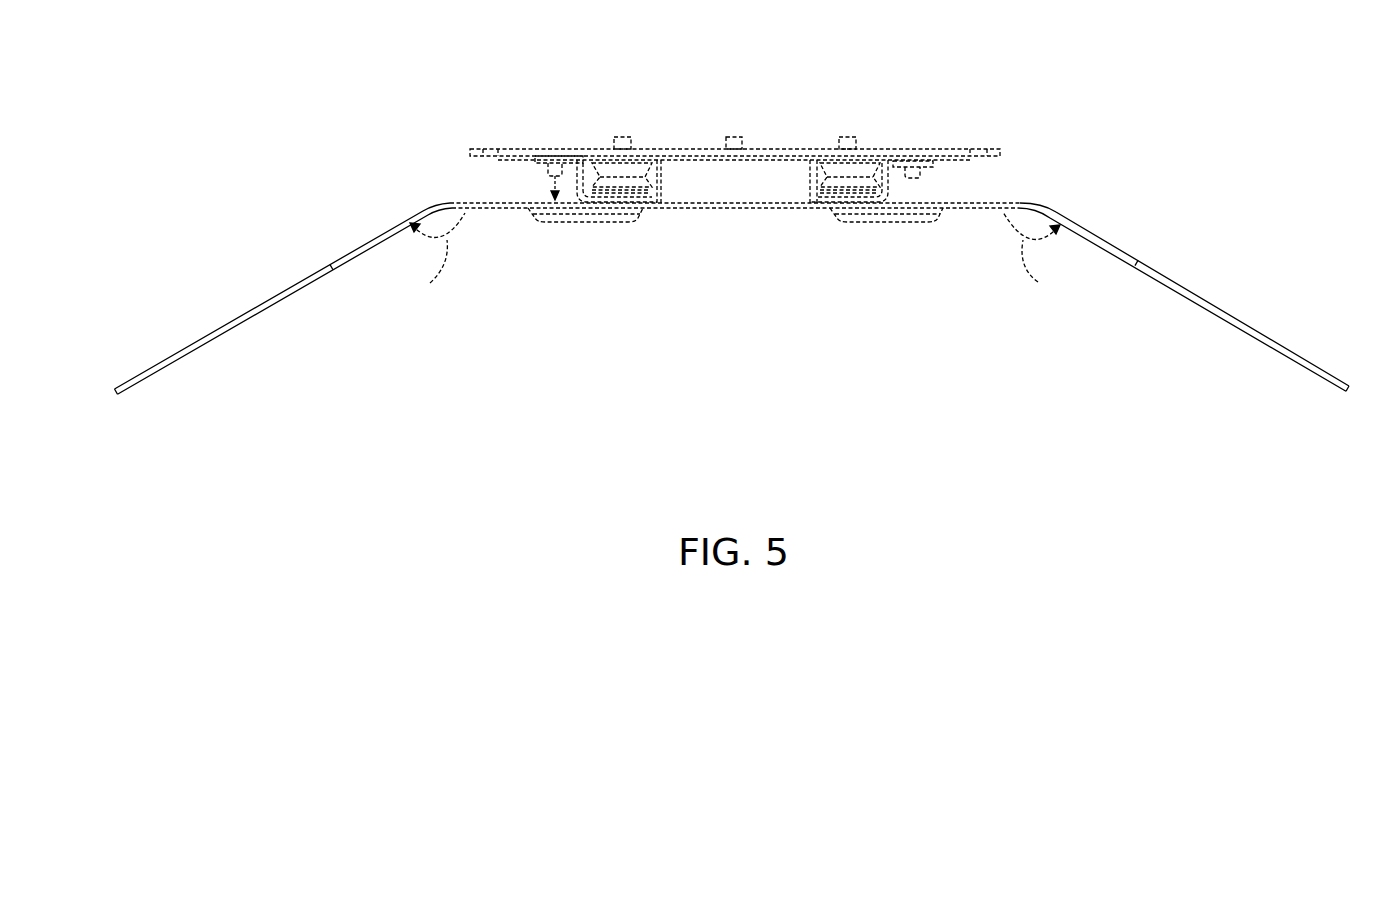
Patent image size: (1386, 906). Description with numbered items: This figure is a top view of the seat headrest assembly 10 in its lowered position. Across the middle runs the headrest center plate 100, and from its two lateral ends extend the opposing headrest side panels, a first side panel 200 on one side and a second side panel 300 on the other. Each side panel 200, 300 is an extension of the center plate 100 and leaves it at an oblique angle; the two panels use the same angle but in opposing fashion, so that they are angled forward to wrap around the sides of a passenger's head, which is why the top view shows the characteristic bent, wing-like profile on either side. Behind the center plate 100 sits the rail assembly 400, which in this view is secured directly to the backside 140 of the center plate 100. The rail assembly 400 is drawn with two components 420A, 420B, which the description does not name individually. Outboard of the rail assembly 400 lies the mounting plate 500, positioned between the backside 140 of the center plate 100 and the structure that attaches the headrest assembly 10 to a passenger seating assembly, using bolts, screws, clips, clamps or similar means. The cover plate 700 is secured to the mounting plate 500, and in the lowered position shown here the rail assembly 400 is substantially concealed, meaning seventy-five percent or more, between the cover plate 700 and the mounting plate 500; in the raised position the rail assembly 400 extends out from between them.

The seat headrest assembly 10 is at (322, 100).
The headrest center plate 100 is at (733, 210).
The backside of the headrest center plate 140 is at (556, 160).
The first side panel 200 is at (1242, 322).
The second side panel 300 is at (227, 322).
The rail assembly 400 is at (792, 178).
The first isolator bracket 420A is at (620, 170).
The second isolator bracket 420B is at (845, 170).
The mounting plate 500 is at (549, 152).
The cover plate 700 is at (900, 189).